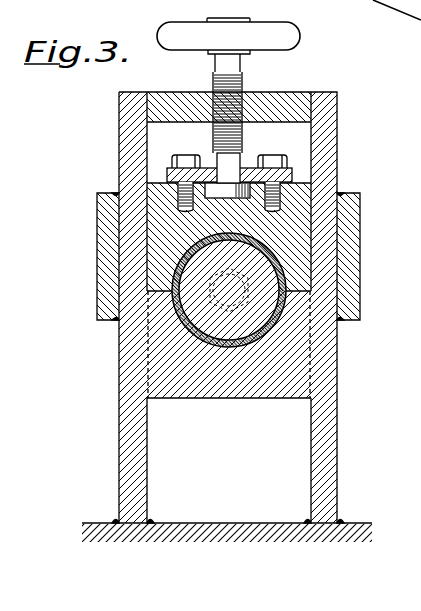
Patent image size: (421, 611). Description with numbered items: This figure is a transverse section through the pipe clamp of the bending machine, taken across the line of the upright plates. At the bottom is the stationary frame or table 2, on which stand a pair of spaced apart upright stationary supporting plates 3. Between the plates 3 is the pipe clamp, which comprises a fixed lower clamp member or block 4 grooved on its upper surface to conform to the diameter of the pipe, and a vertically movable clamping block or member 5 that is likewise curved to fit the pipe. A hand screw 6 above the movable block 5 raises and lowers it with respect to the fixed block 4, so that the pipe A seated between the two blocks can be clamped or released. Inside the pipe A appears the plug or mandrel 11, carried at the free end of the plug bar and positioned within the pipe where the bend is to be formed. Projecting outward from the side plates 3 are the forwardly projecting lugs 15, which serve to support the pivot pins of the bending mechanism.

The stationary frame or table 2 is at (213, 526).
The upright stationary supporting plates 3 is at (121, 153).
The fixed lower clamp member or block 4 is at (239, 388).
The vertically movable clamping block or member 5 is at (300, 207).
The hand screw 6 is at (241, 86).
The plug or mandrel 11 is at (186, 322).
The forwardly projecting lugs 15 is at (100, 263).
The pipe A is at (212, 346).